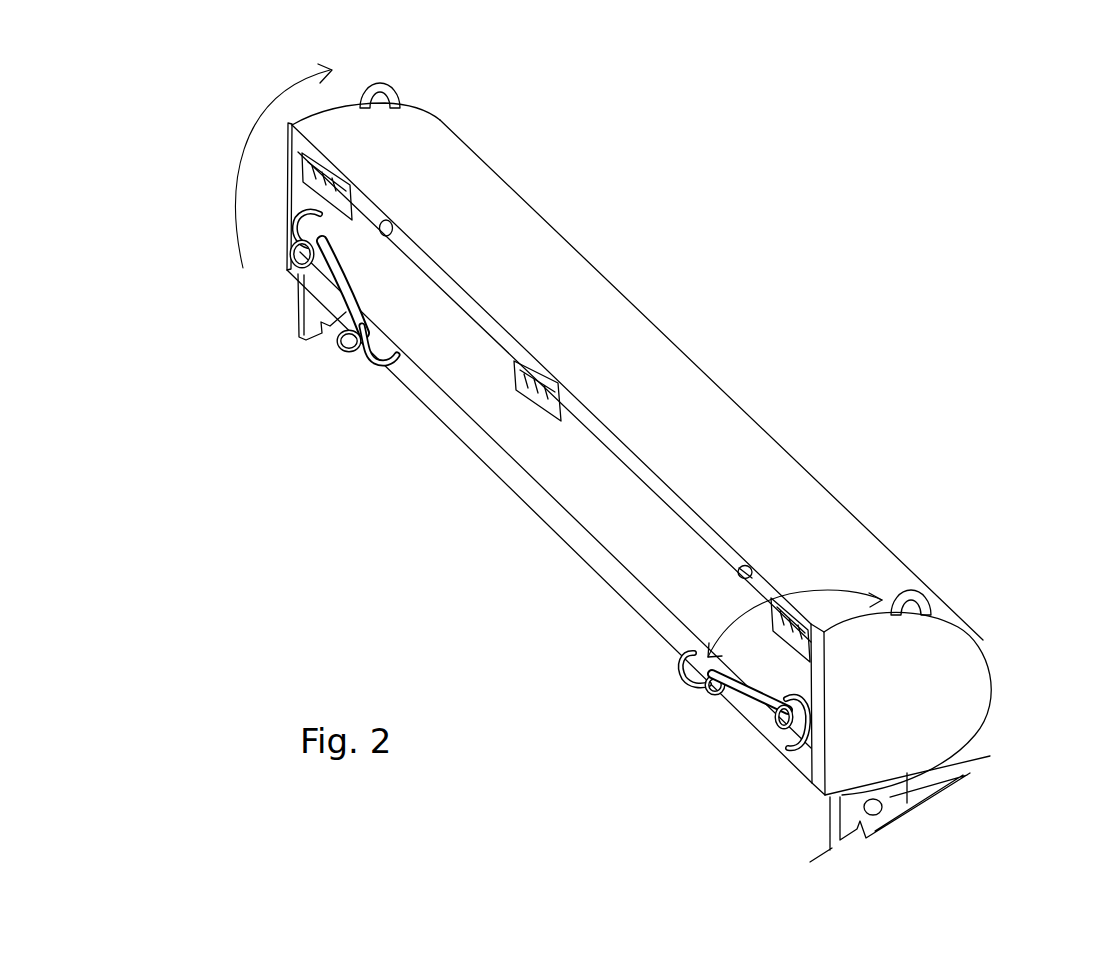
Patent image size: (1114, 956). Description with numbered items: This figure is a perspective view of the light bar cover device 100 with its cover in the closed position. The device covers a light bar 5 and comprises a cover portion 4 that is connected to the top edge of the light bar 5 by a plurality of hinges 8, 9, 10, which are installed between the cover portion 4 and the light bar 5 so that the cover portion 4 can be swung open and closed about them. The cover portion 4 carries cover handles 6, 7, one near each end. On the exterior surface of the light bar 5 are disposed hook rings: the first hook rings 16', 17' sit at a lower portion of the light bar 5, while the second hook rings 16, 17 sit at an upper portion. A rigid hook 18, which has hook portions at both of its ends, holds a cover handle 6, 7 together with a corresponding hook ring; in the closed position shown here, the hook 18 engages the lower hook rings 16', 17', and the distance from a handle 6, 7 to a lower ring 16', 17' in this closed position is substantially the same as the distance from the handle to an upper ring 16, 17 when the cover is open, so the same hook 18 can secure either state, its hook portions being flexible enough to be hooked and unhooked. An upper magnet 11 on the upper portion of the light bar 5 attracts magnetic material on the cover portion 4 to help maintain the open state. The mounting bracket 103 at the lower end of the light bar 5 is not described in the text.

The cover portion 4 is at (578, 478).
The light bar 5 is at (955, 698).
The cover handle 6 is at (302, 217).
The cover handle 7 is at (790, 760).
The hinge 8 is at (793, 617).
The hinge 9 is at (323, 167).
The hinge 10 is at (535, 377).
The upper magnet 11 is at (743, 565).
The hook ring 16 is at (940, 548).
The hook ring 16' is at (628, 673).
The hook ring 17 is at (441, 78).
The hook ring 17' is at (346, 371).
The hook 18 is at (728, 686).
The light bar cover device 100 is at (618, 432).
The mounting bracket 103 is at (990, 756).